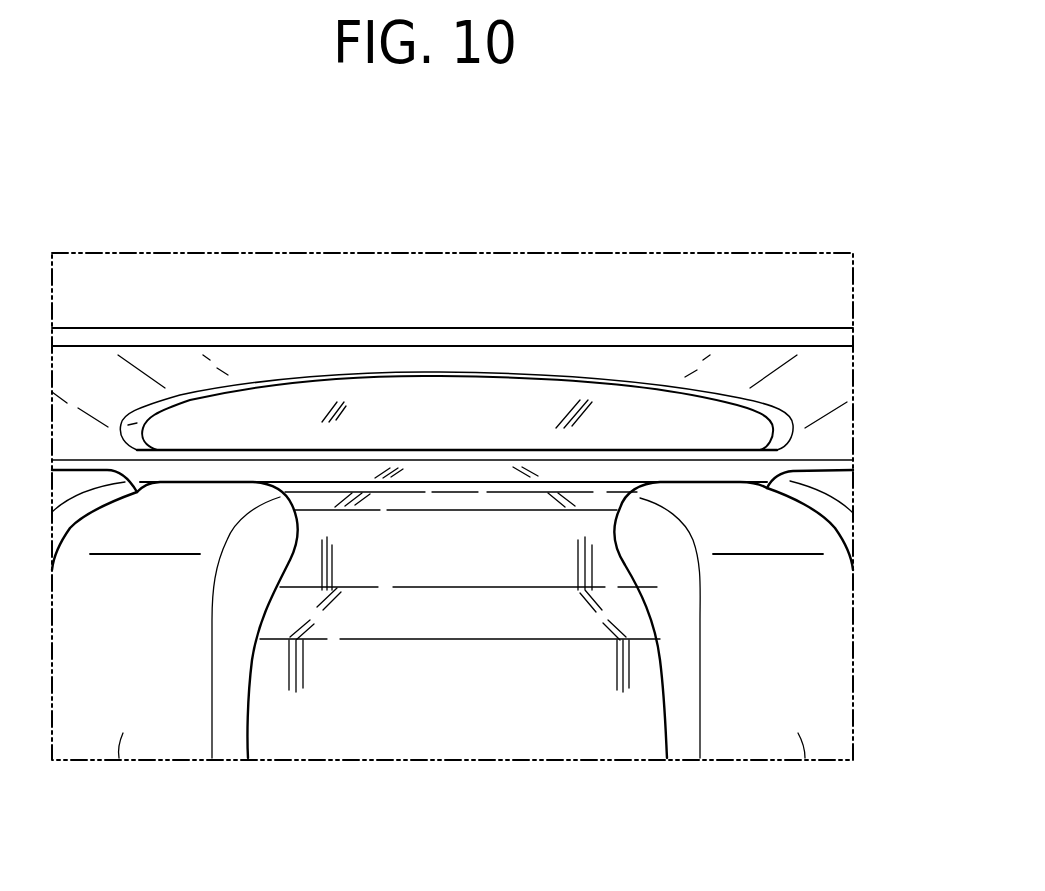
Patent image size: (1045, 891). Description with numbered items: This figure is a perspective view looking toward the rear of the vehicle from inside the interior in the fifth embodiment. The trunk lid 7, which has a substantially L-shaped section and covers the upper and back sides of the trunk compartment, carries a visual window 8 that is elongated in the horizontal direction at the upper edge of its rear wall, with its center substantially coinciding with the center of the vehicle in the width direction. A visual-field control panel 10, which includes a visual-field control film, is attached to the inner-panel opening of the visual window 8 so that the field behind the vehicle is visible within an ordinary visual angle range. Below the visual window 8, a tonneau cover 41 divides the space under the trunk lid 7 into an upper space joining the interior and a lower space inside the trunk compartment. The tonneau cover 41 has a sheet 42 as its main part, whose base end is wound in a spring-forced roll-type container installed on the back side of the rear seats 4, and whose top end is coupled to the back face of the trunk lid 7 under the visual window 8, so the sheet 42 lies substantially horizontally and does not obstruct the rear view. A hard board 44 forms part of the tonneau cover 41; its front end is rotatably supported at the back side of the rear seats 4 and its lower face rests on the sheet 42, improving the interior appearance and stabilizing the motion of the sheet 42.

The rear seats 4 is at (123, 732).
The trunk lid 7 is at (818, 430).
The visual window 8 is at (262, 397).
The visual-field control panel 10 is at (370, 402).
The tonneau cover 41 is at (503, 482).
The sheet 42 is at (624, 472).
The hard board 44 is at (447, 500).